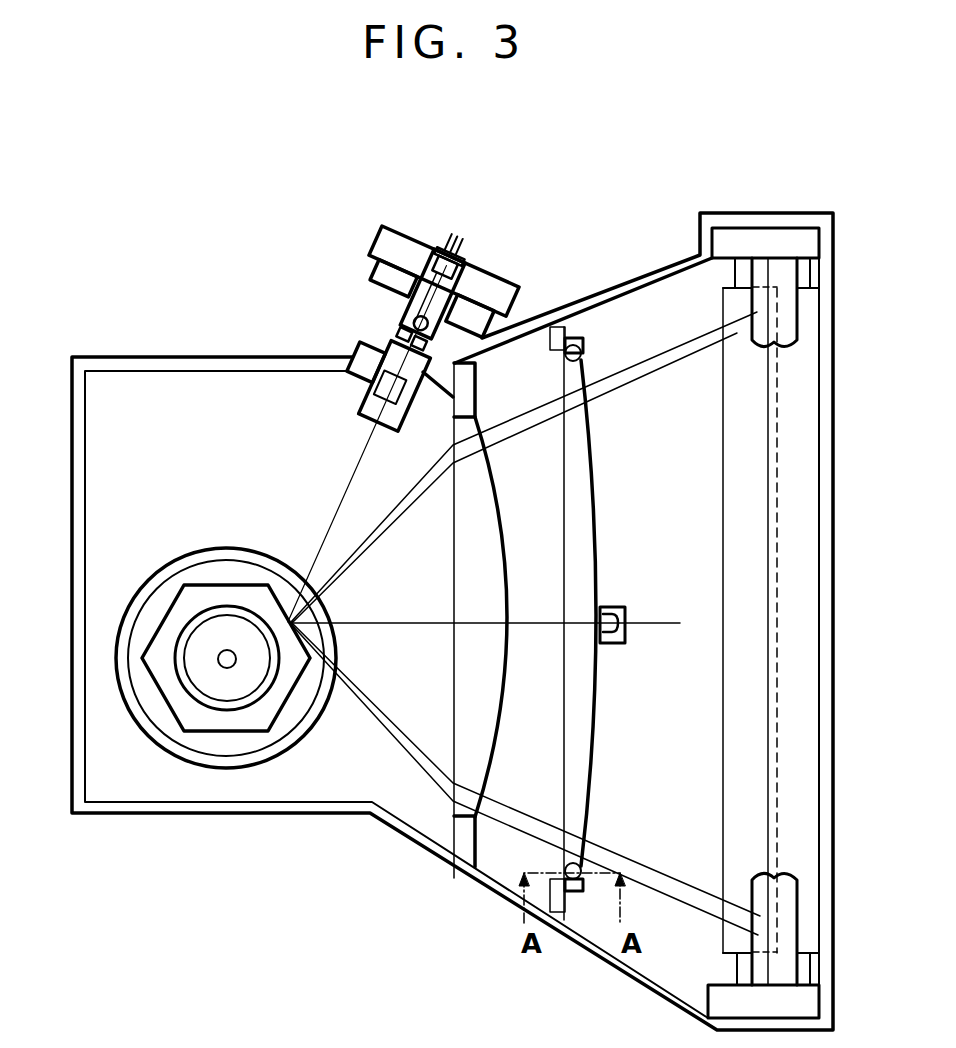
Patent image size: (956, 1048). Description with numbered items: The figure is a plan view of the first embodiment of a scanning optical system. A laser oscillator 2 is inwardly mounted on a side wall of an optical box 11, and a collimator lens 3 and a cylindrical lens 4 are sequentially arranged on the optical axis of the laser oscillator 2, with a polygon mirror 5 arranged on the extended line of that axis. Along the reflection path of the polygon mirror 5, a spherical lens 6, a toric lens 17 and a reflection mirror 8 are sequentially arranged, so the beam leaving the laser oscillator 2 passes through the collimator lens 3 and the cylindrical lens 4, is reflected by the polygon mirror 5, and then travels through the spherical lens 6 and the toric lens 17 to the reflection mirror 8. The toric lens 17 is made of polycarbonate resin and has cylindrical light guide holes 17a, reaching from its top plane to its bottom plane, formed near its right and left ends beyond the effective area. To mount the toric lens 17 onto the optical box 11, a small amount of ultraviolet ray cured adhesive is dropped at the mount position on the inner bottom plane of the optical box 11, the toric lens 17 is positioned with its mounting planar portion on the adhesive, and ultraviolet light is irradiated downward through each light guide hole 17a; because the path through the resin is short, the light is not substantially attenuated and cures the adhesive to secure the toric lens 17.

The laser oscillator 2 is at (462, 262).
The collimator lens 3 is at (410, 308).
The cylindrical lens 4 is at (375, 408).
The polygon mirror 5 is at (218, 745).
The spherical lens 6 is at (465, 803).
The reflection mirror 8 is at (782, 277).
The optical box 11 is at (405, 828).
The toric lens 17 is at (590, 490).
The light guide hole 17a is at (567, 892).